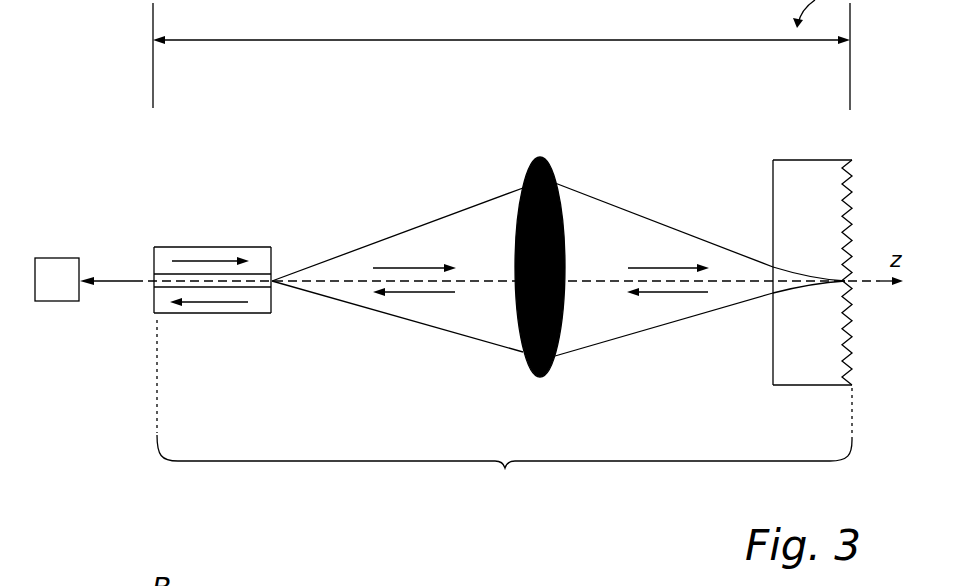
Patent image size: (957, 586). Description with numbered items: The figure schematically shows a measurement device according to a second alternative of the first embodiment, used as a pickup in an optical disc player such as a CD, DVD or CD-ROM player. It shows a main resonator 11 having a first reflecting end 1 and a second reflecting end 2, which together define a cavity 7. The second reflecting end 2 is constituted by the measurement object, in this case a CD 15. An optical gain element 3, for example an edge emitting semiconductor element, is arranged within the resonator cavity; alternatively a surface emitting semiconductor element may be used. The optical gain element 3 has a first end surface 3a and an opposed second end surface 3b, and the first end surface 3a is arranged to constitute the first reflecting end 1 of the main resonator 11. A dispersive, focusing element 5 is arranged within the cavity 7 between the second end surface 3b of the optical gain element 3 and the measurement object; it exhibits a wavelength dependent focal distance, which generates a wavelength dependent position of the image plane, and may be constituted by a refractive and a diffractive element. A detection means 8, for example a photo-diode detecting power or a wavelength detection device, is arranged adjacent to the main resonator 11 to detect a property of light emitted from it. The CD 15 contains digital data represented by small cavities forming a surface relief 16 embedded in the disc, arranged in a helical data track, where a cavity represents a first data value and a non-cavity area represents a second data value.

The first reflecting end 1 is at (154, 247).
The second reflecting end 2 is at (855, 387).
The optical gain element 3 is at (229, 224).
The first end surface 3a is at (154, 298).
The second end surface 3b is at (273, 300).
The dispersive, focusing element 5 is at (550, 172).
The cavity 7 is at (501, 56).
The detection means 8 is at (59, 258).
The main resonator 11 is at (504, 414).
The CD 15 is at (812, 160).
The surface relief 16 is at (842, 310).